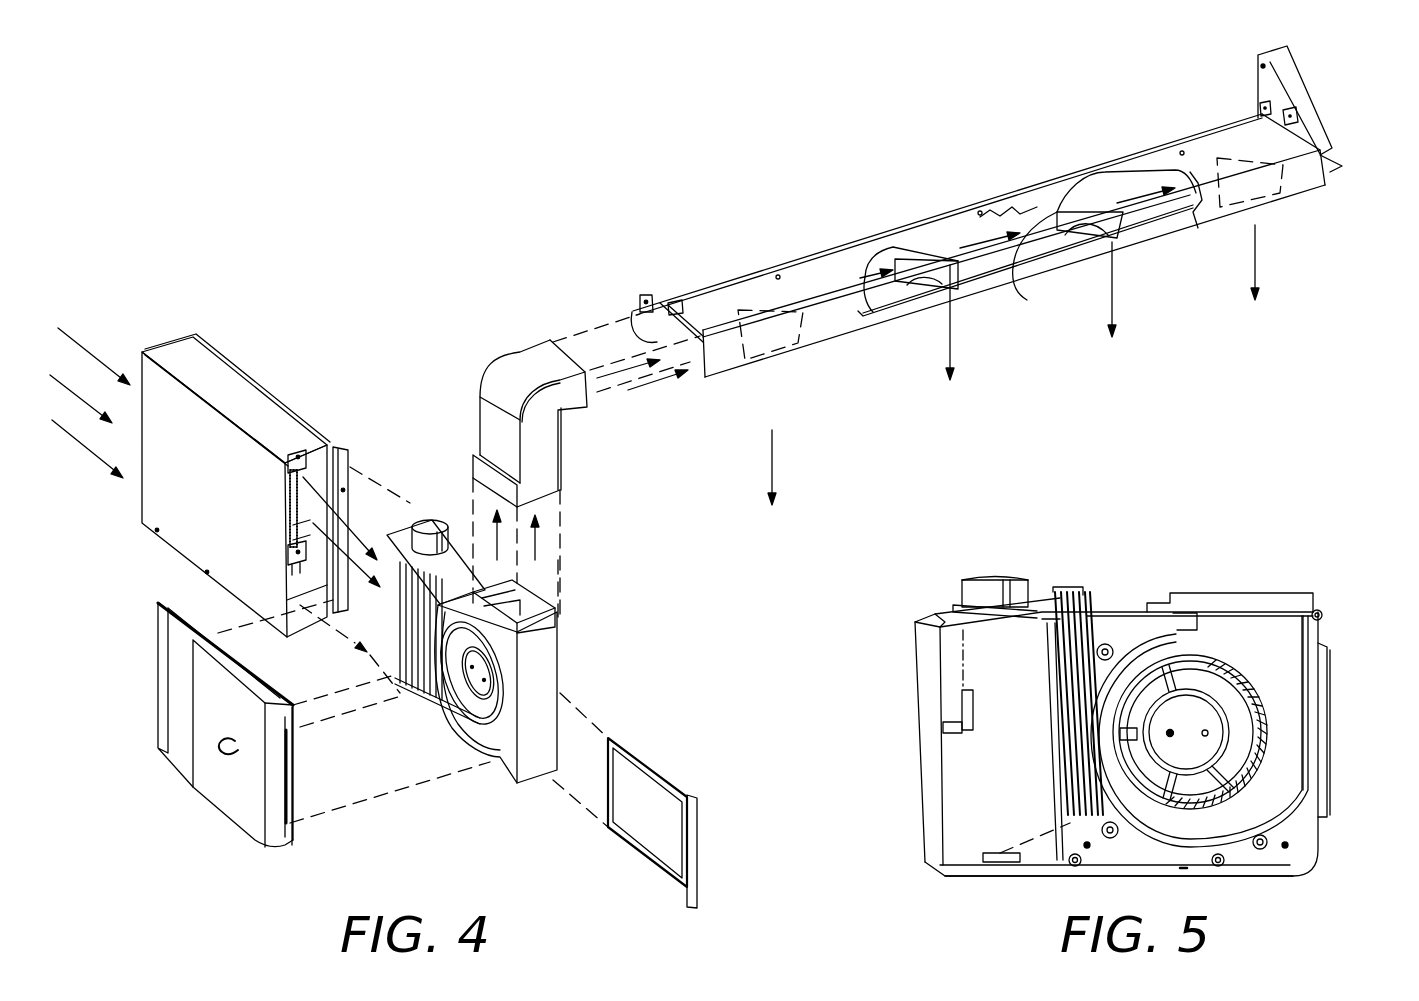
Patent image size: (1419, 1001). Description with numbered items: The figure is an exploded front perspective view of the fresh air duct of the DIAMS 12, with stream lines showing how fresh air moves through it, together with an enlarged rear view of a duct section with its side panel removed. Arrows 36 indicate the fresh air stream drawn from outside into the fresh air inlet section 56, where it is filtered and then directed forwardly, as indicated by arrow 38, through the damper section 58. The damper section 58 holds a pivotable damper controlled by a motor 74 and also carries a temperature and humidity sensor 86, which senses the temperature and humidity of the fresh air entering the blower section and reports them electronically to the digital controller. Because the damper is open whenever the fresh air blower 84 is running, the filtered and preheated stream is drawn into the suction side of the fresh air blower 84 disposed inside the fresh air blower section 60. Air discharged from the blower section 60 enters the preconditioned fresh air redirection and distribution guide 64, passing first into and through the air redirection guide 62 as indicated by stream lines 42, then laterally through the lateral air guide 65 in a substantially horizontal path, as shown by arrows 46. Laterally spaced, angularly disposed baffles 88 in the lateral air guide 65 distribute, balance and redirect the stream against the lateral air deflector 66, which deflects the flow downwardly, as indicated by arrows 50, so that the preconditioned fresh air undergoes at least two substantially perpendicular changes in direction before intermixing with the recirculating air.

In FIG. 4, the DIAMS 12 is at (430, 228).
In FIG. 4, the arrows 36 is at (82, 347).
In FIG. 4, the fresh air inlet section 56 is at (260, 371).
In FIG. 4, the arrow 38 is at (331, 500).
In FIG. 4, the damper section 58 is at (430, 513).
In FIG. 5, the damper section 58 is at (993, 877).
In FIG. 4, the air redirection guide 62 is at (512, 372).
In FIG. 4, the arrows 46 is at (622, 337).
In FIG. 4, the preconditioned fresh air redirection and distribution guide 64 is at (905, 197).
In FIG. 4, the lateral air guide 65 is at (836, 262).
In FIG. 4, the lateral air deflector 66 is at (1310, 185).
In FIG. 4, the arrows 50 is at (1114, 285).
In FIG. 4, the baffles 88 is at (1027, 233).
In FIG. 4, the stream lines 42 is at (565, 575).
In FIG. 4, the fresh air blower section 60 is at (565, 658).
In FIG. 5, the fresh air blower section 60 is at (1205, 582).
In FIG. 5, the motor 74 is at (992, 578).
In FIG. 5, the temperature and humidity sensor 86 is at (960, 703).
In FIG. 5, the fresh air blower 84 is at (1290, 680).